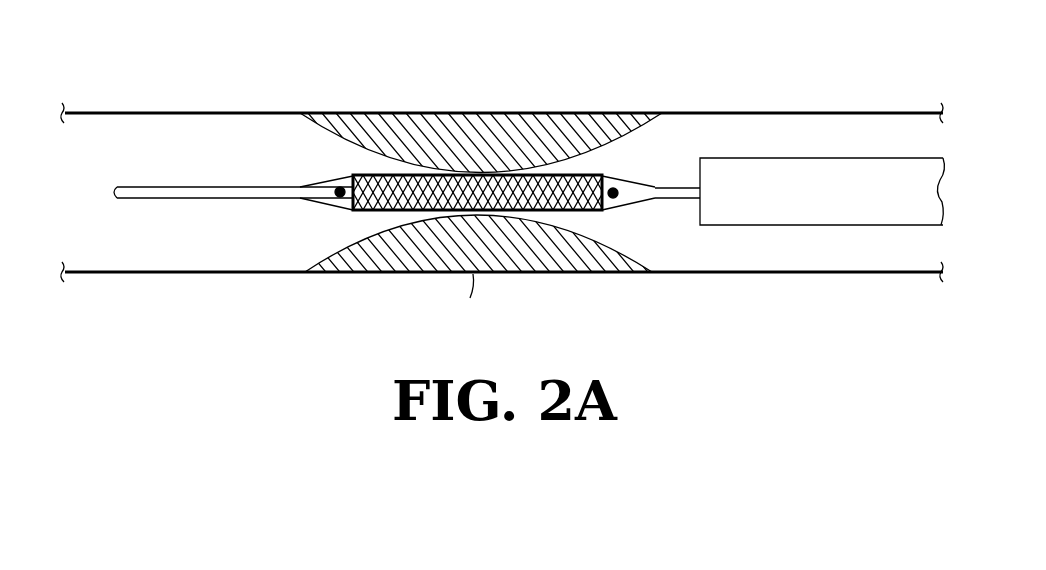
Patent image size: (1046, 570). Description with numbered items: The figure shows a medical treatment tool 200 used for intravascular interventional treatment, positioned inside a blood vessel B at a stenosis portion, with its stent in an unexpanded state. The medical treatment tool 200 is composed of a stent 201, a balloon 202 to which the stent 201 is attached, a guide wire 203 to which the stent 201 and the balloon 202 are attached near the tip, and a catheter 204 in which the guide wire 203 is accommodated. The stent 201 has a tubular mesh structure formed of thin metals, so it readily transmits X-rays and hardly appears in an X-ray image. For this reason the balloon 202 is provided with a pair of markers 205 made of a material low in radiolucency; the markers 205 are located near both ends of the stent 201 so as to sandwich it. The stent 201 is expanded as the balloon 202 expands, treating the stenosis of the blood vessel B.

The medical treatment tool 200 is at (577, 130).
The stent 201 is at (483, 178).
The balloon 202 is at (350, 178).
The guide wire 203 is at (178, 186).
The catheter 204 is at (833, 157).
The markers 205 is at (338, 186).
The blood vessel B is at (904, 112).